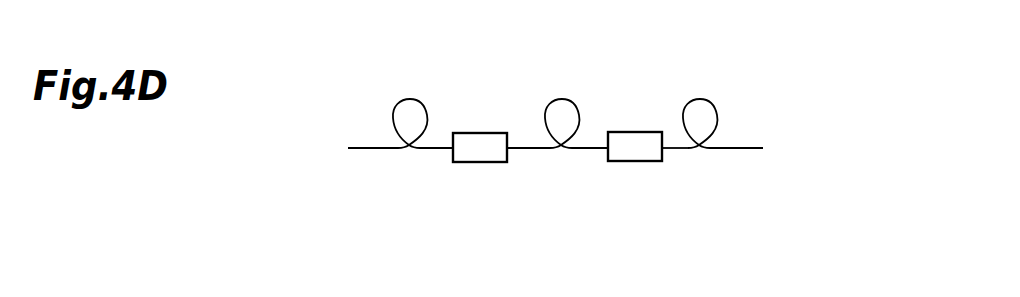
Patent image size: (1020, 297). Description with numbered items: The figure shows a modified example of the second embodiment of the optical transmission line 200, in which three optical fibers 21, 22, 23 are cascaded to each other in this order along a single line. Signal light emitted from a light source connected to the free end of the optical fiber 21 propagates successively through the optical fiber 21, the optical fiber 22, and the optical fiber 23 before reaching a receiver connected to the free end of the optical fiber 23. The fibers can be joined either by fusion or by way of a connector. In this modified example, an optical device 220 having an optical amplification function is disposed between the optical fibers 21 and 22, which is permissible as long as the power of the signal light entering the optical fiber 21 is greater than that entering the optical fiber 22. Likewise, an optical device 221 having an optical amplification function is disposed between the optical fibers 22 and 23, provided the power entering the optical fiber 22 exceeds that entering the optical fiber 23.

The optical transmission line 200 is at (757, 189).
The optical fiber 21 is at (423, 103).
The optical fiber 22 is at (575, 103).
The optical fiber 23 is at (714, 103).
The optical device 220 is at (480, 133).
The optical device 221 is at (633, 131).